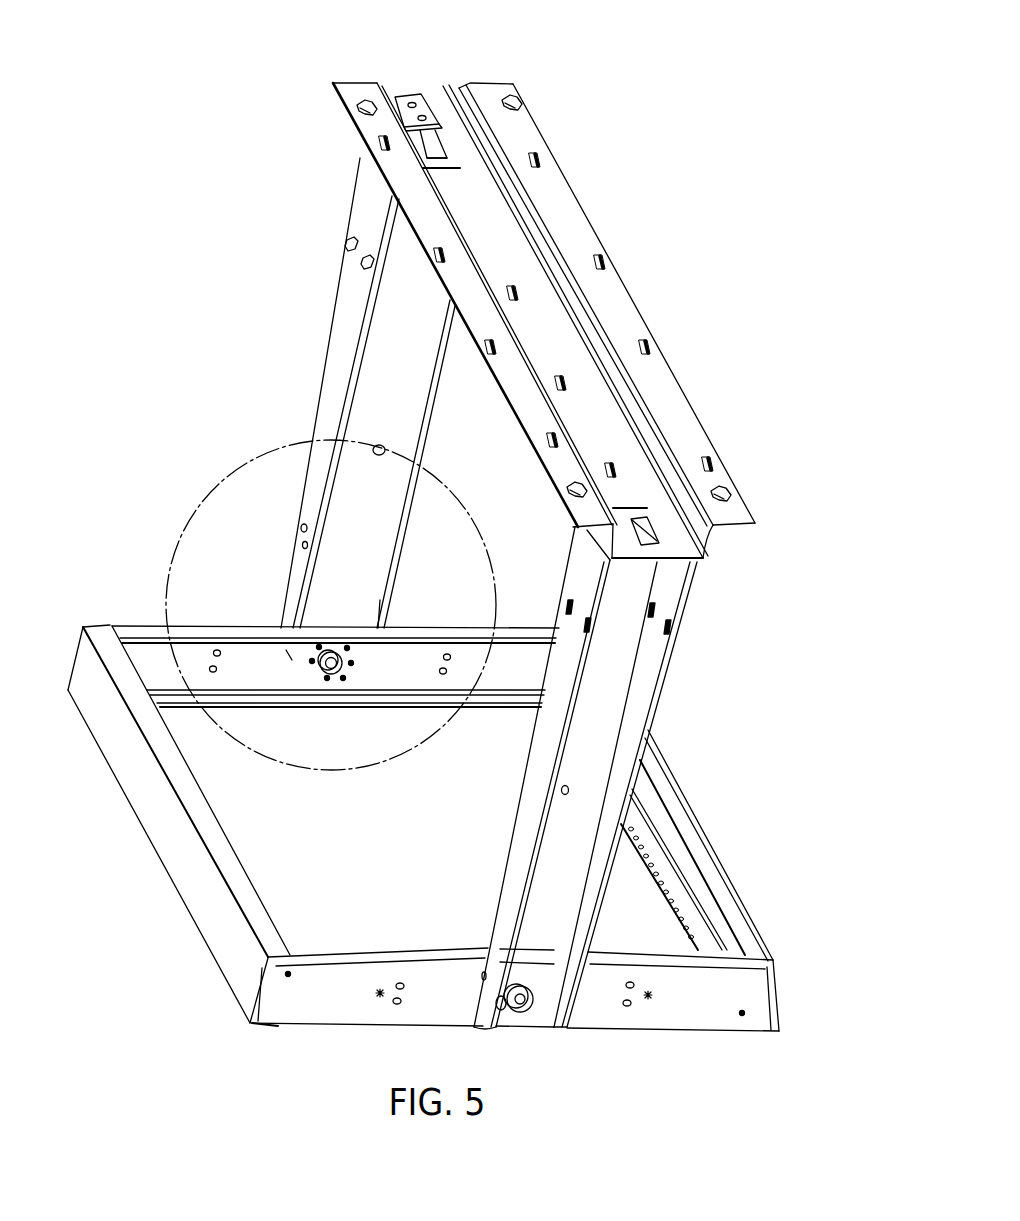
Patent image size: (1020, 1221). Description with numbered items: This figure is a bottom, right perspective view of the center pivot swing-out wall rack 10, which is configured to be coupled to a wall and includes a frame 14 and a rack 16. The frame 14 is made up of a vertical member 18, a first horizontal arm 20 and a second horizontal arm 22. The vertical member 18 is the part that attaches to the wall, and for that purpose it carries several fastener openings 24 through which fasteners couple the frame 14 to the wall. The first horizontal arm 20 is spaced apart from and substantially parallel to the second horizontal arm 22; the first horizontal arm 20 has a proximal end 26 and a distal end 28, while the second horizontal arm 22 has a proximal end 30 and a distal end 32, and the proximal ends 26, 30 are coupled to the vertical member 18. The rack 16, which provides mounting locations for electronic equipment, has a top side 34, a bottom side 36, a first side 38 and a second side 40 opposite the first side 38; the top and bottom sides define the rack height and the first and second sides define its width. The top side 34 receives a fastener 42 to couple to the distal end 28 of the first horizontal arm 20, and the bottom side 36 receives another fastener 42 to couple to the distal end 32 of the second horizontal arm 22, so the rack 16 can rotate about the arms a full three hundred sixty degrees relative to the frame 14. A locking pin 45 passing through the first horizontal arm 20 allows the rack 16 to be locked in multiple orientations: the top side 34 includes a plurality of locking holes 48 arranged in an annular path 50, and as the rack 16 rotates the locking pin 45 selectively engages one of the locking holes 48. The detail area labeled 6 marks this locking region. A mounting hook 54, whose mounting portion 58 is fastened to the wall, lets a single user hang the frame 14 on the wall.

The section line / detail circle 6 is at (262, 453).
The swing-out wall rack 10 is at (191, 255).
The frame 14 is at (713, 307).
The rack 16 is at (131, 923).
The vertical member 18 is at (500, 237).
The first horizontal arm 20 is at (384, 398).
The second horizontal arm 22 is at (618, 663).
The fastener openings 24 is at (512, 103).
The proximal end 26 is at (413, 307).
The distal end 28 is at (365, 555).
The proximal end 30 is at (635, 577).
The distal end 32 is at (538, 977).
The top side 34 is at (150, 645).
The bottom side 36 is at (690, 1000).
The first side 38 is at (718, 845).
The second side 40 is at (85, 730).
The fastener 42 is at (332, 652).
The locking pin 45 is at (352, 662).
The locking holes 48 is at (316, 673).
The annular path 50 is at (292, 660).
The mounting hook 54 is at (401, 83).
The mounting portion 58 is at (423, 90).